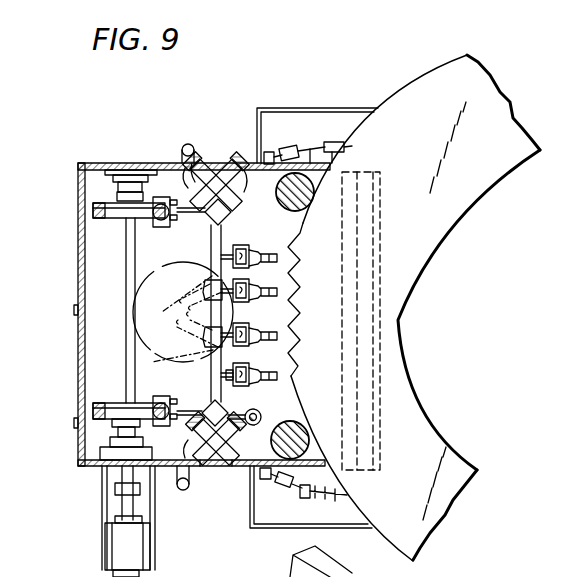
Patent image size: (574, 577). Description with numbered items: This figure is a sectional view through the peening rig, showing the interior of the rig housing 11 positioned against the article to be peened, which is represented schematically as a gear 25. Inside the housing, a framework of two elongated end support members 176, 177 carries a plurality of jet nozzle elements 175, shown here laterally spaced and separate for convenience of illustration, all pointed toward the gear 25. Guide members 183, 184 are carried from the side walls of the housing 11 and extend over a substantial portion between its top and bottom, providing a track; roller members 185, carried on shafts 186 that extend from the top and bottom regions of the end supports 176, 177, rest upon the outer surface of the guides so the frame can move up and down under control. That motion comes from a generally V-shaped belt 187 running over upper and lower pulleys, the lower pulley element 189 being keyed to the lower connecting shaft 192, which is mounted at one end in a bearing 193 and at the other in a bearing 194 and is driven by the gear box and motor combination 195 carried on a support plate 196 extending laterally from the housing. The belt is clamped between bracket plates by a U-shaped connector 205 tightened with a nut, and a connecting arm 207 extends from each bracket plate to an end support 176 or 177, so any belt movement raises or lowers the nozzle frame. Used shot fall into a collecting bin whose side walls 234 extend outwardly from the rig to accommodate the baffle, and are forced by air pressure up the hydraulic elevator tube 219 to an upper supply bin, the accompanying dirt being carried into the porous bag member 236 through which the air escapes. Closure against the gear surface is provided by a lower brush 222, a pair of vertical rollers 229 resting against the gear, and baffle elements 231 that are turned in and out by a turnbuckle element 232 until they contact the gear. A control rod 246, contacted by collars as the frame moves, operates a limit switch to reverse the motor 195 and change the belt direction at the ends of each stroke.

The rig housing 11 is at (78, 377).
The gear 25 is at (431, 75).
The jet nozzle element 175 is at (266, 264).
The end support member 176 is at (238, 388).
The end support member 177 is at (210, 228).
The guide member 183 is at (212, 466).
The guide member 184 is at (224, 170).
The roller member 185 is at (192, 176).
The shaft 186 is at (242, 245).
The belt 187 is at (92, 212).
The lower pulley element 189 is at (115, 219).
The lower connecting shaft 192 is at (140, 288).
The bearing 193 is at (127, 168).
The bearing 194 is at (100, 465).
The gear box and motor combination 195 is at (112, 541).
The support plate 196 is at (152, 500).
The U-shaped connector 205 is at (160, 203).
The connecting arm 207 is at (193, 215).
The hydraulic elevator tube 219 is at (190, 144).
The lower brush 222 is at (340, 318).
The vertical roller 229 is at (291, 212).
The baffle element 231 is at (333, 142).
The turnbuckle element 232 is at (286, 152).
The side wall 234 is at (314, 108).
The porous bag member 236 is at (380, 328).
The control rod 246 is at (261, 410).